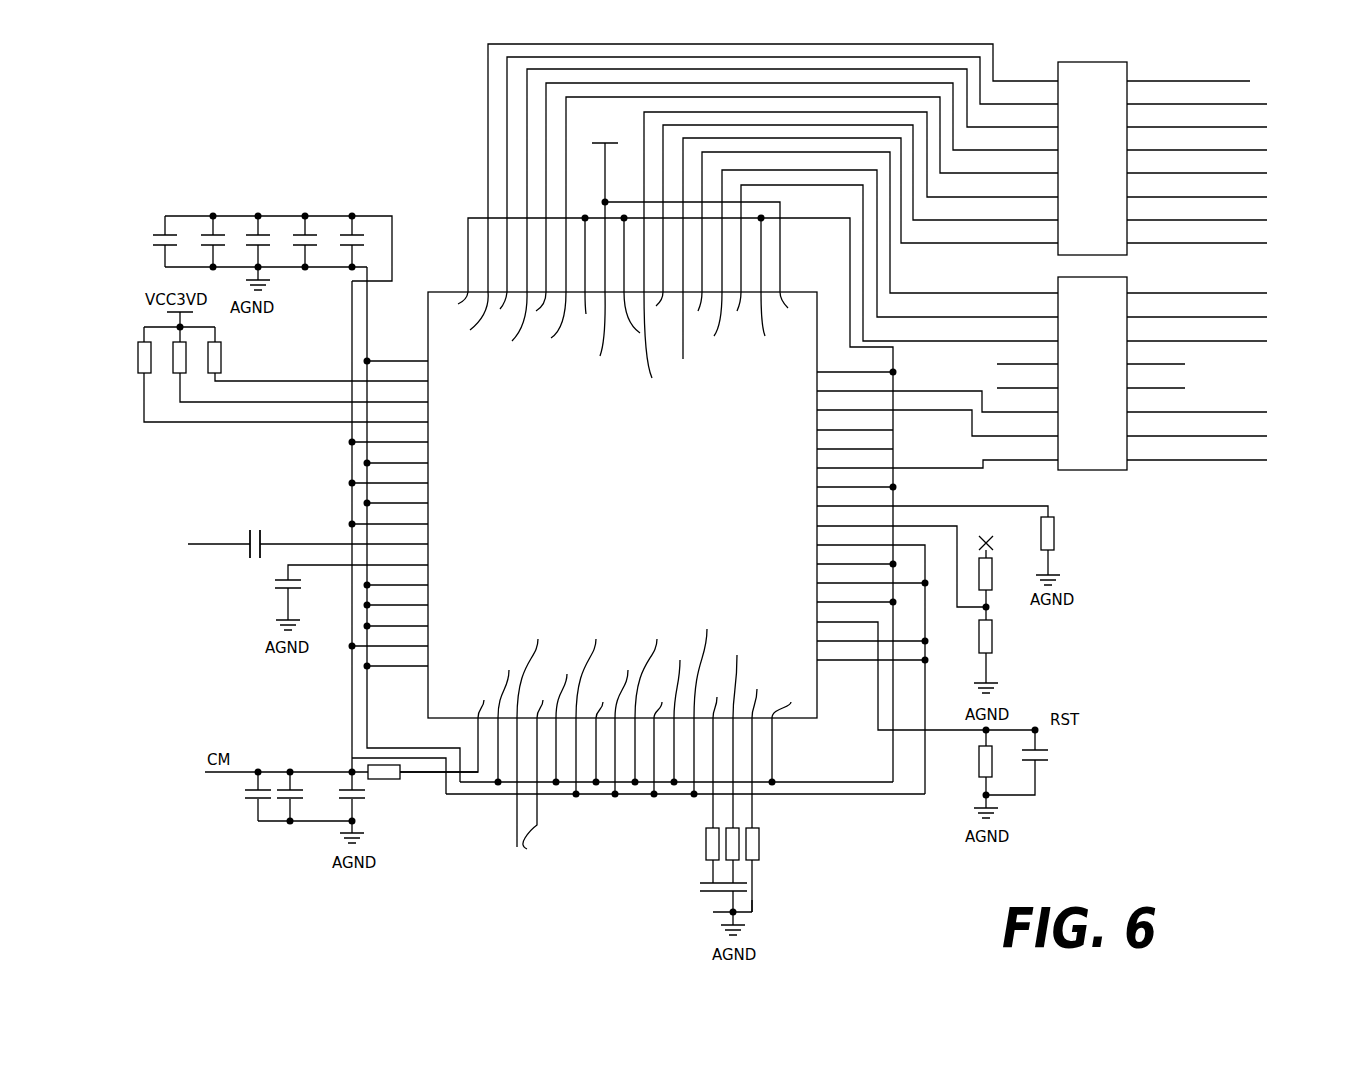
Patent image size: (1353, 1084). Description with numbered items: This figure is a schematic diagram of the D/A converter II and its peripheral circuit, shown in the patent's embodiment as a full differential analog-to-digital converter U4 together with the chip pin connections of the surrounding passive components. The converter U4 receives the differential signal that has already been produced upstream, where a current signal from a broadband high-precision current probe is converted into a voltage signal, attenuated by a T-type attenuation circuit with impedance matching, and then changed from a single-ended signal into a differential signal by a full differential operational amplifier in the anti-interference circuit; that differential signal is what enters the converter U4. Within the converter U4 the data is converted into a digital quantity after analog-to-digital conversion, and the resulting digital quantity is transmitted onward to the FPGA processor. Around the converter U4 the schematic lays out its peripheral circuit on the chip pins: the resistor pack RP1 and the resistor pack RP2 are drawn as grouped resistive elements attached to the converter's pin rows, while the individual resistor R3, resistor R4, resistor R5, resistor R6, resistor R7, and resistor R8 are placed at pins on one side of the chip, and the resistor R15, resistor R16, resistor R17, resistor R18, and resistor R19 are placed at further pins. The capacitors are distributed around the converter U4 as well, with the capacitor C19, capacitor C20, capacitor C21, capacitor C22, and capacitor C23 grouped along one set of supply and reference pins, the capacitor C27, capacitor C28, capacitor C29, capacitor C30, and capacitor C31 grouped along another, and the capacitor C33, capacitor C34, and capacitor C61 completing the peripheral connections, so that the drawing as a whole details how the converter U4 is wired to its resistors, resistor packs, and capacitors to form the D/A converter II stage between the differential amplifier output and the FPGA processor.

The ADS5520 analog-to-digital converter U4 is at (601, 459).
The resistor pack RP1 is at (1135, 149).
The resistor pack RP2 is at (1132, 364).
The resistor R3 is at (155, 357).
The resistor R4 is at (190, 357).
The resistor R5 is at (225, 357).
The resistor R6 is at (1059, 533).
The resistor R7 is at (998, 574).
The resistor R8 is at (998, 636).
The resistor R15 is at (385, 783).
The resistor R16 is at (971, 761).
The resistor R17 is at (698, 844).
The resistor R18 is at (735, 833).
The resistor R19 is at (769, 844).
The capacitor C19 is at (179, 251).
The capacitor C20 is at (226, 242).
The capacitor C21 is at (272, 242).
The capacitor C22 is at (319, 242).
The capacitor C23 is at (365, 242).
The capacitor C27 is at (258, 554).
The capacitor C28 is at (302, 605).
The capacitor C29 is at (1046, 766).
The capacitor C30 is at (307, 806).
The capacitor C31 is at (368, 806).
The capacitor C33 is at (717, 899).
The capacitor C34 is at (768, 890).
The capacitor C61 is at (268, 806).